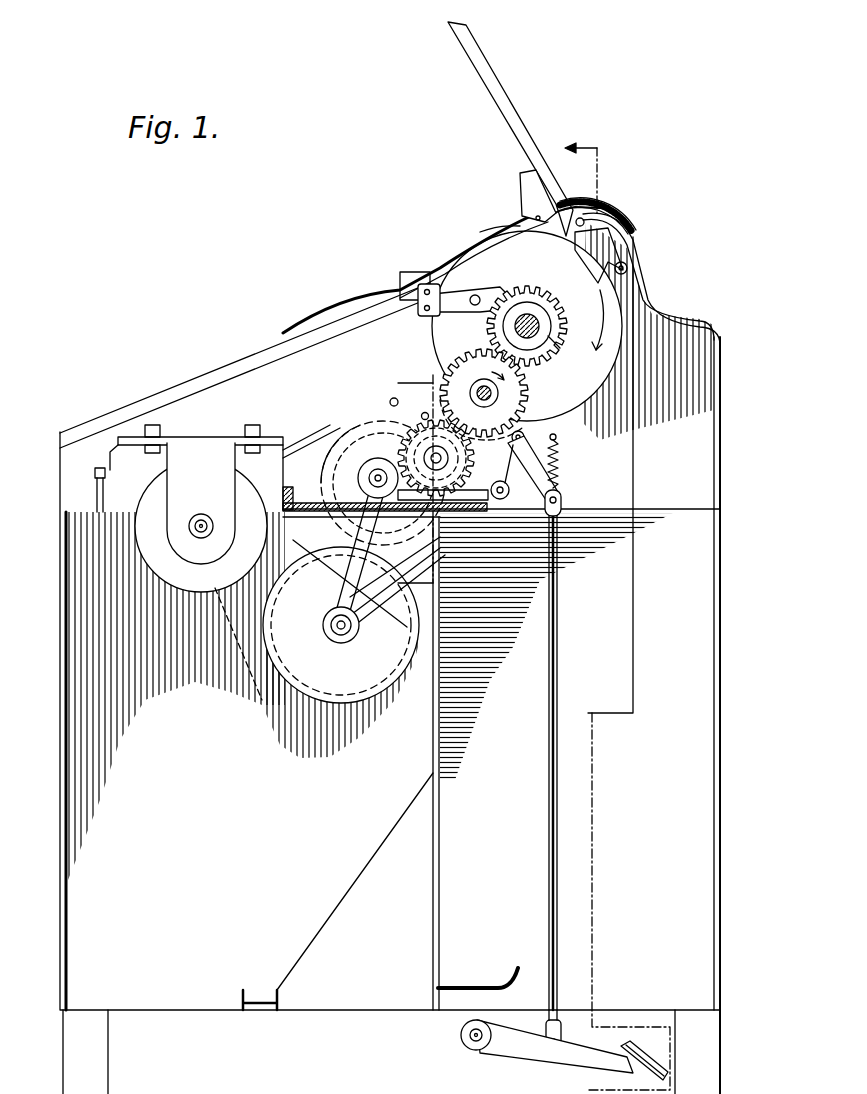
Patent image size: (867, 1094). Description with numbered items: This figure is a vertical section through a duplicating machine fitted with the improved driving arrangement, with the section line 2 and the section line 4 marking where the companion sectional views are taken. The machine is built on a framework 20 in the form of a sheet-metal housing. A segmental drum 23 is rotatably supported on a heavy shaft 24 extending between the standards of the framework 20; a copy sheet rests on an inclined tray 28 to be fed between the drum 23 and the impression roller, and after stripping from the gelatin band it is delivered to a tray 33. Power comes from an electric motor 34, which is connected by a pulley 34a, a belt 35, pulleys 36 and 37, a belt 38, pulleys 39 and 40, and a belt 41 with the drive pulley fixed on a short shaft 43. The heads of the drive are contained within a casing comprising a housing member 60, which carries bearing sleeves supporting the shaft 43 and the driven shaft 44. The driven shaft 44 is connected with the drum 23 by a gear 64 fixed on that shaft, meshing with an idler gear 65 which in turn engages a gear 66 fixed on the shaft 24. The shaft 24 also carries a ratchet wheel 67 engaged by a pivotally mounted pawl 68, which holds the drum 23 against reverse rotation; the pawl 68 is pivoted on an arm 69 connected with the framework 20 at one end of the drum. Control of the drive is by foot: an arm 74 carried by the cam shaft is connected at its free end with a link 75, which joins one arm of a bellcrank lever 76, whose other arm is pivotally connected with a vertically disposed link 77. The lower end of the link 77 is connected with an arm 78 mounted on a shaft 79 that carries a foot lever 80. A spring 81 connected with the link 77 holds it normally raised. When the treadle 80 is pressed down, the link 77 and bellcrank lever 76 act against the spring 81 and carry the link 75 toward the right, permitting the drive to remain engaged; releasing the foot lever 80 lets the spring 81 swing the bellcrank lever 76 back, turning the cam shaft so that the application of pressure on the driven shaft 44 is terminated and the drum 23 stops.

The section line 2- 2 is at (588, 176).
The section line 4- 4 is at (415, 473).
The framework 20 is at (60, 688).
The segmental drum 23 is at (582, 420).
The heavy shaft 24 is at (542, 320).
The inclined tray 28 is at (488, 90).
The tray 33 is at (125, 430).
The electric motor 34 is at (190, 575).
The pulley 34a is at (228, 582).
The belt 35 is at (312, 448).
The pulley 36 is at (380, 432).
The pulley 37 is at (368, 440).
The belt 38 is at (224, 608).
The pulley 39 is at (325, 688).
The pulley 40 is at (344, 642).
The belt 41 is at (380, 598).
The short shaft 43 is at (393, 400).
The driven shaft 44 is at (440, 546).
The housing member 60 is at (372, 464).
The gear 64 is at (446, 500).
The idler gear 65 is at (528, 382).
The gear 66 is at (540, 292).
The ratchet wheel 67 is at (552, 340).
The pawl 68 is at (497, 234).
The arm 69 is at (455, 312).
The arm 74 is at (424, 414).
The link 75 is at (522, 402).
The bellcrank lever 76 is at (510, 470).
The link 77 is at (548, 665).
The arm 78 is at (515, 1052).
The shaft 79 is at (461, 1035).
The foot lever 80 is at (580, 1058).
The spring 81 is at (560, 482).